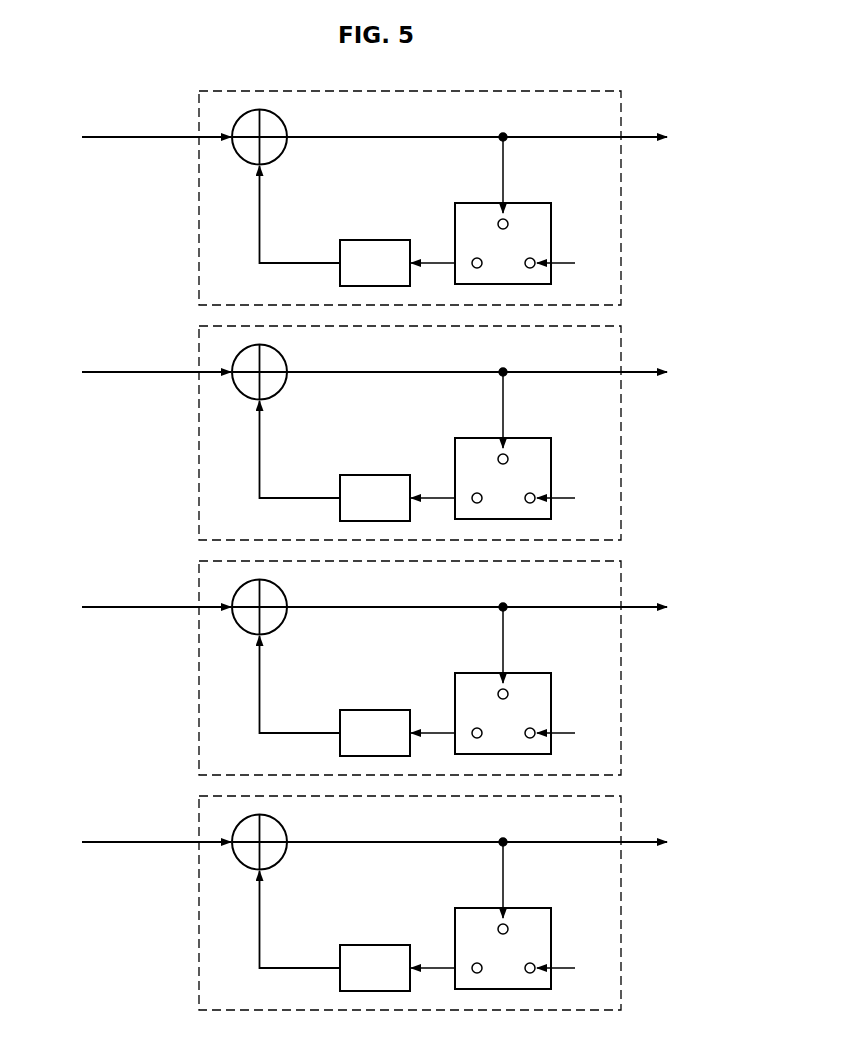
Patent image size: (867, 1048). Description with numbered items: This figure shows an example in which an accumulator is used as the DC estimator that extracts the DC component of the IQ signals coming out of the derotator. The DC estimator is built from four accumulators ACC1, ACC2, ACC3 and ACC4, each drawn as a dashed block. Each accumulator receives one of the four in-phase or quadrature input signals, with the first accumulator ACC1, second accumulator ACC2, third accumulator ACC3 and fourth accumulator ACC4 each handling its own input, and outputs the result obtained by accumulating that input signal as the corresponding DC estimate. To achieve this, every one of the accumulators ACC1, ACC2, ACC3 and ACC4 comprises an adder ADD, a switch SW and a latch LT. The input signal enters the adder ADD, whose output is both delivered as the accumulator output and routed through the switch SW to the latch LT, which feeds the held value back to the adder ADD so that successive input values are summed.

The accumulator ACC1 is at (395, 198).
The accumulator ACC2 is at (398, 433).
The accumulator ACC3 is at (388, 668).
The accumulator ACC4 is at (393, 903).
The adder ADD is at (277, 153).
The latch LT is at (373, 240).
The switch SW is at (533, 203).